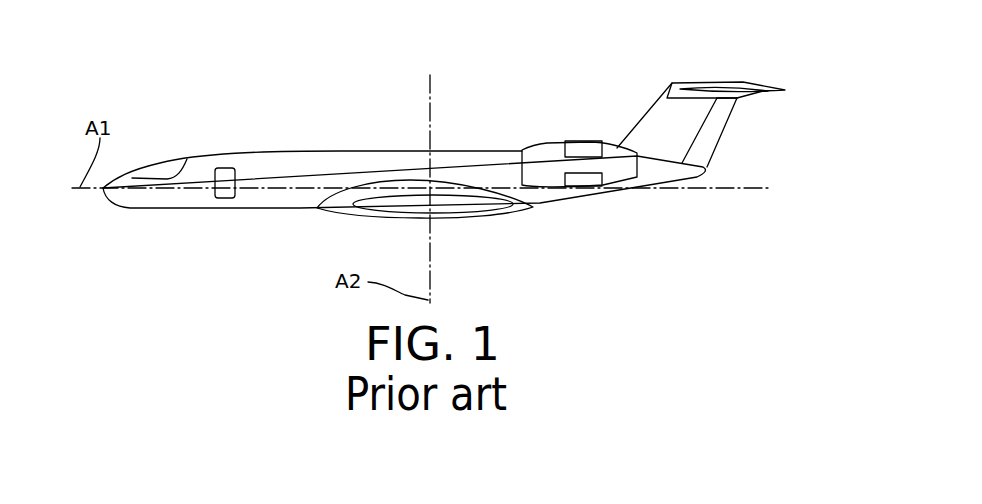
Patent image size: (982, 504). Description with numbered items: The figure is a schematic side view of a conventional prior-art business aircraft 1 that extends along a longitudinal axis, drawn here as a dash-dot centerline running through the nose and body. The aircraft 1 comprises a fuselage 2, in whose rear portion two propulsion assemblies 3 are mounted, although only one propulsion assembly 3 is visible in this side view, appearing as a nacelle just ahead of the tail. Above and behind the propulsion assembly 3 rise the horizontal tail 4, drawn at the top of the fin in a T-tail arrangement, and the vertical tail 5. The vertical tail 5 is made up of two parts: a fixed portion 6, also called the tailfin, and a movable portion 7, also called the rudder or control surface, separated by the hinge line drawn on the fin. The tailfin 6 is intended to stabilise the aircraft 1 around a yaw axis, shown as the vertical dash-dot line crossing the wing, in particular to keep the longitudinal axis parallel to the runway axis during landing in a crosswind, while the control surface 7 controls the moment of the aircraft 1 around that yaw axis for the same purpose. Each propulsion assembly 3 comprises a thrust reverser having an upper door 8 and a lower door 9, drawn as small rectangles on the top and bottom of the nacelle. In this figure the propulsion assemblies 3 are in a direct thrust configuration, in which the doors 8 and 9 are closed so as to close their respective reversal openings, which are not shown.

The business aircraft 1 is at (306, 89).
The fuselage 2 is at (268, 198).
The propulsion assembly 3 is at (545, 150).
The horizontal tail 4 is at (767, 88).
The vertical tail 5 is at (724, 257).
The fixed portion (tailfin) 6 is at (665, 140).
The movable portion (rudder / control surface) 7 is at (708, 137).
The upper door 8 is at (587, 145).
The lower door 9 is at (587, 178).